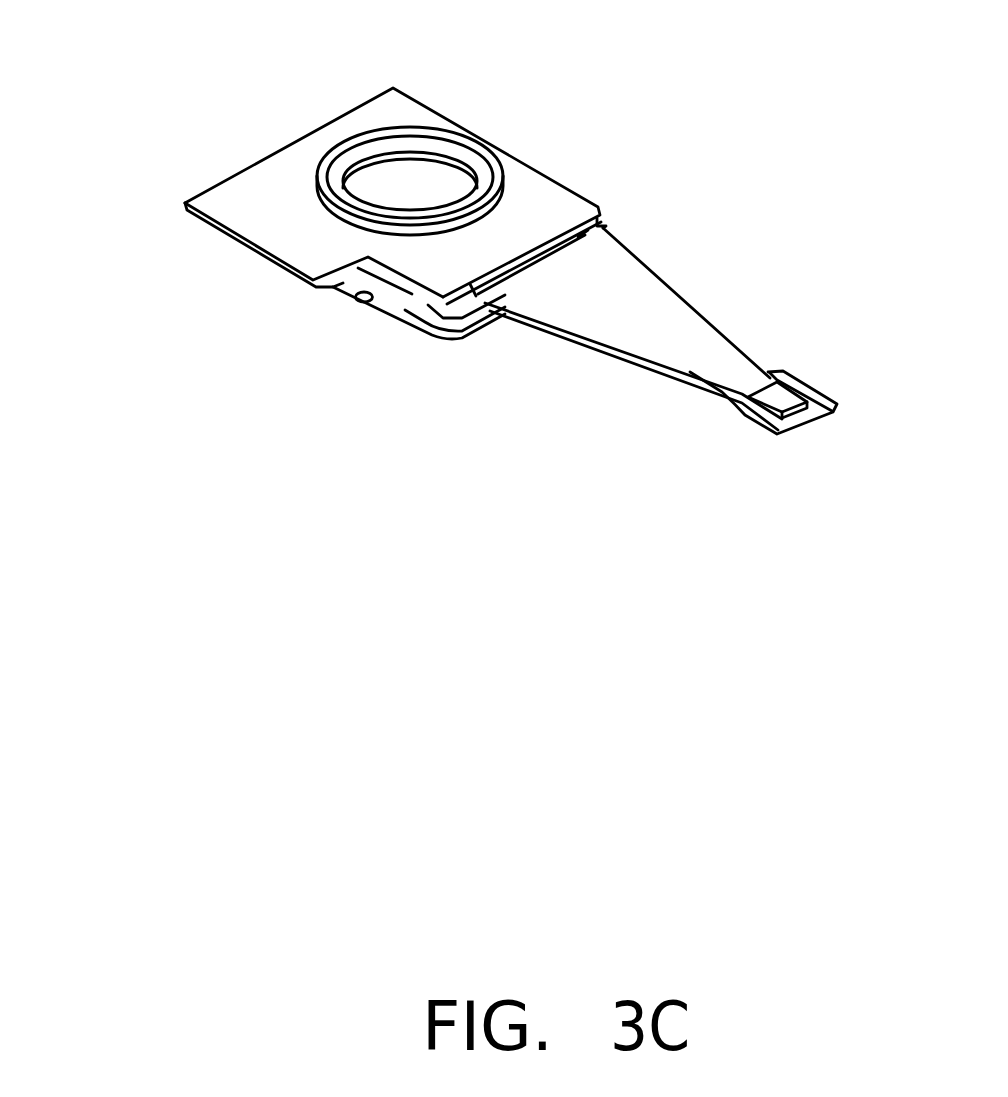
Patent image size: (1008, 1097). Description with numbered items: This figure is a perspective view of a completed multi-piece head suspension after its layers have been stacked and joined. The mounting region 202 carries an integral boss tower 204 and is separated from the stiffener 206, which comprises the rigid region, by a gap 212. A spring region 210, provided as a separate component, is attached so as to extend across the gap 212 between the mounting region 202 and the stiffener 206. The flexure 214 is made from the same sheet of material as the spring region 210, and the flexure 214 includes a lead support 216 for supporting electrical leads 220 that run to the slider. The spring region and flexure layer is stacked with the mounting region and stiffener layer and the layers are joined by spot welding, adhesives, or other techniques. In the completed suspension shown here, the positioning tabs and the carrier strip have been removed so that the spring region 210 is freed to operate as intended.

The mounting region 202 is at (283, 172).
The boss tower 204 is at (473, 135).
The stiffener 206 is at (687, 322).
The spring region 210 is at (593, 225).
The gap 212 is at (538, 260).
The flexure 214 is at (741, 418).
The lead support 216 is at (340, 290).
The electrical leads 220 is at (433, 322).